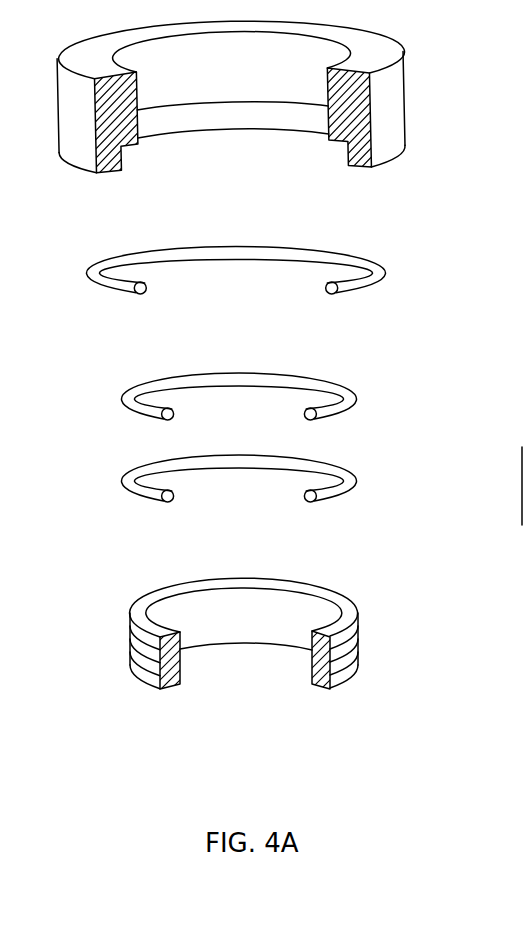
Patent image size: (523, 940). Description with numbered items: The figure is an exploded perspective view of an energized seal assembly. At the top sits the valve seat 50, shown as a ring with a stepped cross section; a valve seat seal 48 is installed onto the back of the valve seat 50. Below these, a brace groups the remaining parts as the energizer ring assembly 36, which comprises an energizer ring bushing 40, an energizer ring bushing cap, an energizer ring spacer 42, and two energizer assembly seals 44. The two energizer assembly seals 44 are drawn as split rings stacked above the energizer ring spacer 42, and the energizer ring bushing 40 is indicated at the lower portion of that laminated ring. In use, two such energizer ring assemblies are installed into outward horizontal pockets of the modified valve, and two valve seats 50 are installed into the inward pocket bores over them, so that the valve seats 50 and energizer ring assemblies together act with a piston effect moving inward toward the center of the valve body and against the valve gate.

The valve seat 50 is at (408, 92).
The valve seat seal 48 is at (390, 265).
The energizer ring assembly 36 is at (248, 546).
The energizer assembly seal 44 is at (360, 393).
The energizer ring spacer 42 is at (280, 667).
The energizer ring bushing 40 is at (320, 682).